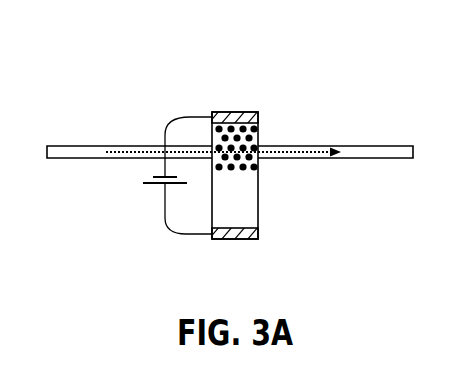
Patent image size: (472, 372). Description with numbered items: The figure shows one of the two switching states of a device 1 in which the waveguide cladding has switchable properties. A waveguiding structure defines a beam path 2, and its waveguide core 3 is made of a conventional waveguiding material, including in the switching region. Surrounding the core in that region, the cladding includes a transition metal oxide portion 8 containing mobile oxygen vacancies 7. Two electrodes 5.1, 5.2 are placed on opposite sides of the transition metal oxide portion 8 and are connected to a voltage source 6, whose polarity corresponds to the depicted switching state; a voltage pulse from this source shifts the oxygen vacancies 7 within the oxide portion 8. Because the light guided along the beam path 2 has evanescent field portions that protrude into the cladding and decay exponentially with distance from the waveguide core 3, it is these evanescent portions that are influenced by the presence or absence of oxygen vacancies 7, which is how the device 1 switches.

The device 1 is at (123, 91).
The beam path 2 is at (323, 152).
The waveguide core 3 is at (66, 154).
The electrode 5.1 is at (252, 116).
The electrode 5.2 is at (230, 232).
The voltage source 6 is at (160, 187).
The oxygen vacancies 7 is at (220, 128).
The transition metal oxide portion 8 is at (250, 208).